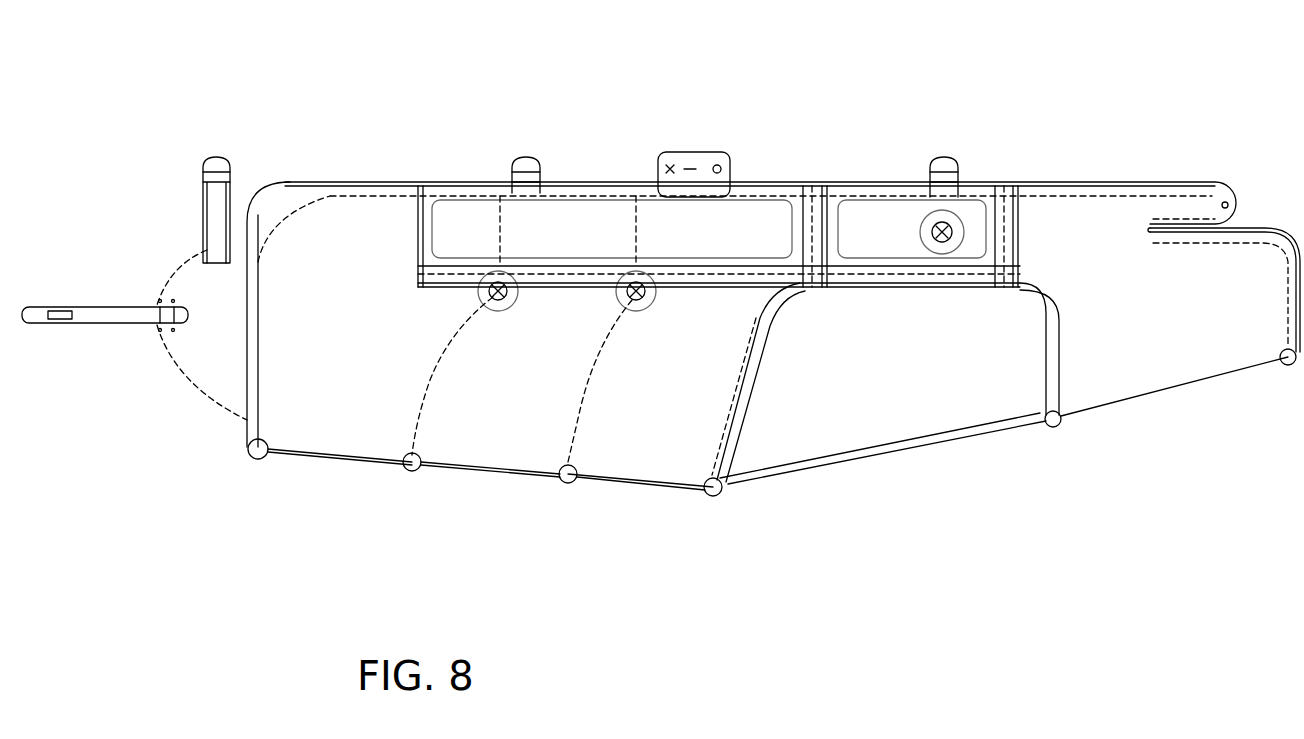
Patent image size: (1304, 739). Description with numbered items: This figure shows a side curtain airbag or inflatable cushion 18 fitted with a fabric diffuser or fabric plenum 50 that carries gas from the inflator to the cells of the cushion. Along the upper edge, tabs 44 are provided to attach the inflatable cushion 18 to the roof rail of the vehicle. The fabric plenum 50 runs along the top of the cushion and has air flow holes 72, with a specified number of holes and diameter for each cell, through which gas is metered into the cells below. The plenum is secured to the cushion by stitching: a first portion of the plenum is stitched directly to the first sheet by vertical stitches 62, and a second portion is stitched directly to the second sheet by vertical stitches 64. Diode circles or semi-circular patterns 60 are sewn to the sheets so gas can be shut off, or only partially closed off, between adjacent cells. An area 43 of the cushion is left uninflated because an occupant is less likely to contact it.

The inflatable cushion 18 is at (387, 492).
The area 43 is at (887, 415).
The tabs 44 is at (220, 203).
The fabric plenum 50 is at (760, 193).
The semi-circular patterns 60 is at (636, 300).
The vertical stitches 62 is at (500, 220).
The vertical stitches 64 is at (498, 300).
The air flow holes 72 is at (450, 238).